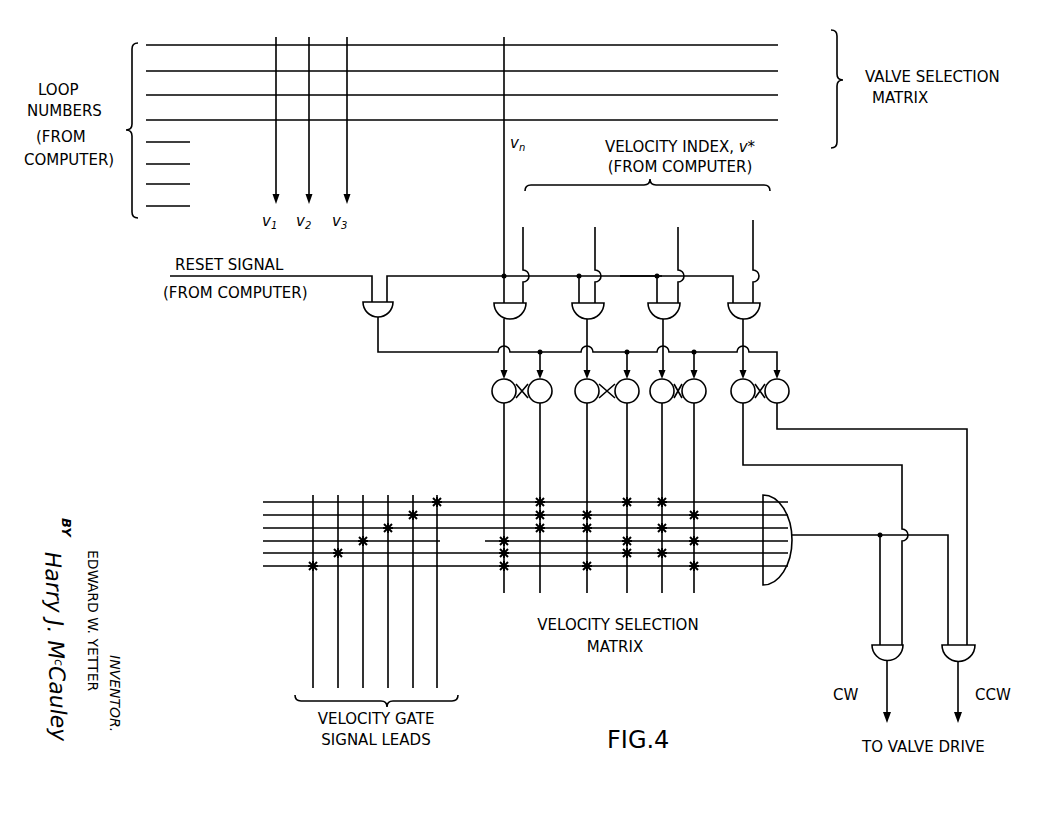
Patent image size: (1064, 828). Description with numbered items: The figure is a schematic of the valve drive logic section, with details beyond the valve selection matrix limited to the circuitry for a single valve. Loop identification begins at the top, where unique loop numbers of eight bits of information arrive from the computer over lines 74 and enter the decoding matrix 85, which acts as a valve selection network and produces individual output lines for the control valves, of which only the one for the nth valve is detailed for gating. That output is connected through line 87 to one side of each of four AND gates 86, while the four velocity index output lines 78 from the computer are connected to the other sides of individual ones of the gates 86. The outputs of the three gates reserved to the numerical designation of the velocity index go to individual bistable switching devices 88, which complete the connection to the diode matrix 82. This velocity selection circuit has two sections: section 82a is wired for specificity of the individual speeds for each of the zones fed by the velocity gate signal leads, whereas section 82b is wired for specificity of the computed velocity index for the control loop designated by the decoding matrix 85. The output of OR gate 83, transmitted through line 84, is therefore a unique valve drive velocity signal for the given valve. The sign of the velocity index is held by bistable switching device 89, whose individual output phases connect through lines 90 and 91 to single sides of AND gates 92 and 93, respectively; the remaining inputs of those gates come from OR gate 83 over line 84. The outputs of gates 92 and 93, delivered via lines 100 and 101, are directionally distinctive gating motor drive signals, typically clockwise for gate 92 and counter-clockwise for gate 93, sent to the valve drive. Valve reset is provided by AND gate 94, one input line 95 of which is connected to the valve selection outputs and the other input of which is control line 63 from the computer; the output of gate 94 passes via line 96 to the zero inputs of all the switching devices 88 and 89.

The lines 74 is at (183, 96).
The decoding matrix 85 is at (624, 54).
The velocity index output lines 78 is at (761, 240).
The control line 63 is at (346, 274).
The input line 95 is at (459, 274).
The line 87 is at (628, 276).
The AND gate 94 is at (367, 316).
The line 96 is at (445, 350).
The AND gates 86 is at (761, 330).
The bistable switching devices 88 is at (492, 391).
The bistable switching device 89 is at (789, 398).
The line 90 is at (903, 527).
The line 91 is at (968, 522).
The diode matrix 82 is at (474, 550).
The section of the matrix 82a is at (372, 501).
The section of the matrix 82b is at (642, 582).
The OR gate 83 is at (779, 573).
The line 84 is at (836, 533).
The AND gate 92 is at (877, 656).
The AND gate 93 is at (976, 655).
The line 100 is at (889, 680).
The line 101 is at (956, 688).